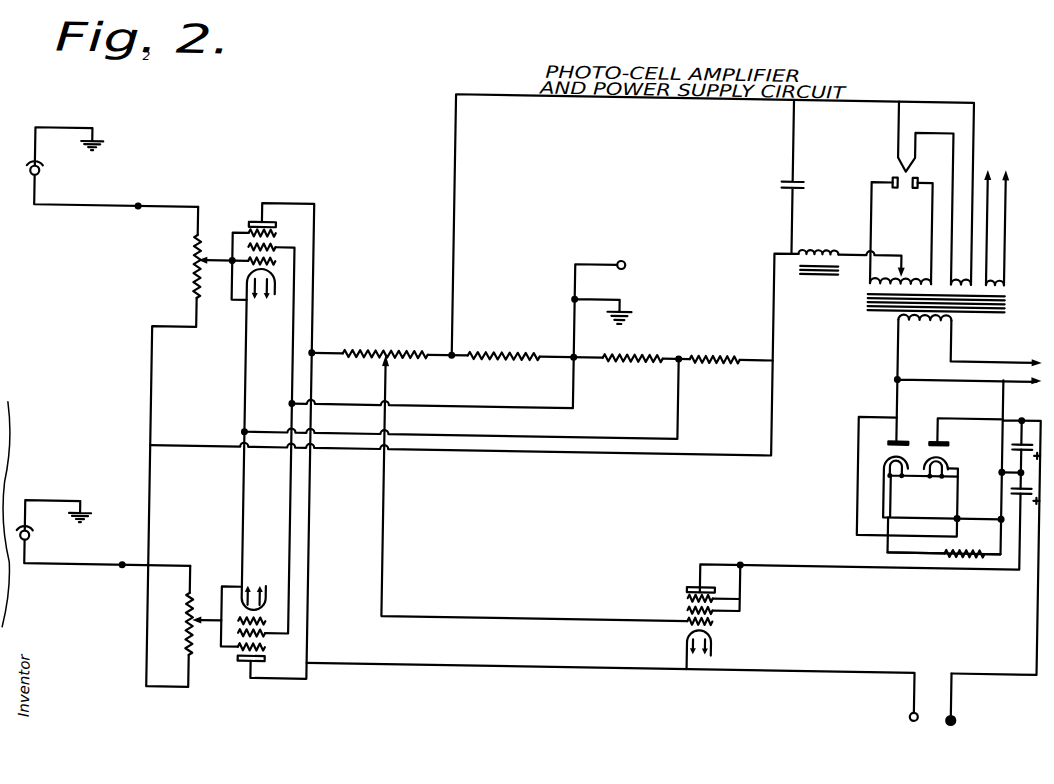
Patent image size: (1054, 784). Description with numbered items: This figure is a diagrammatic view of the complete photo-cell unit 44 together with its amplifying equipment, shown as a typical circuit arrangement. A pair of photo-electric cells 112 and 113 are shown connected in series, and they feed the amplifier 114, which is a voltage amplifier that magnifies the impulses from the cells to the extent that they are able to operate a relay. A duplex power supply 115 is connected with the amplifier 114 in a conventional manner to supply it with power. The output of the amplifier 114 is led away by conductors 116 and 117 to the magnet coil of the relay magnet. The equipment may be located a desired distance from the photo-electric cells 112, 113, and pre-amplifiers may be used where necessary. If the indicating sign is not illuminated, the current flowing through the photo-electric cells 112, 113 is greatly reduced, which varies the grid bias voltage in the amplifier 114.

The photo-cell unit 44 is at (601, 285).
The photo-electric cell 112 is at (36, 178).
The photo-electric cell 113 is at (31, 543).
The amplifier 114 is at (236, 578).
The duplex power supply 115 is at (1008, 264).
The conductor 116 is at (856, 666).
The conductor 117 is at (1013, 670).